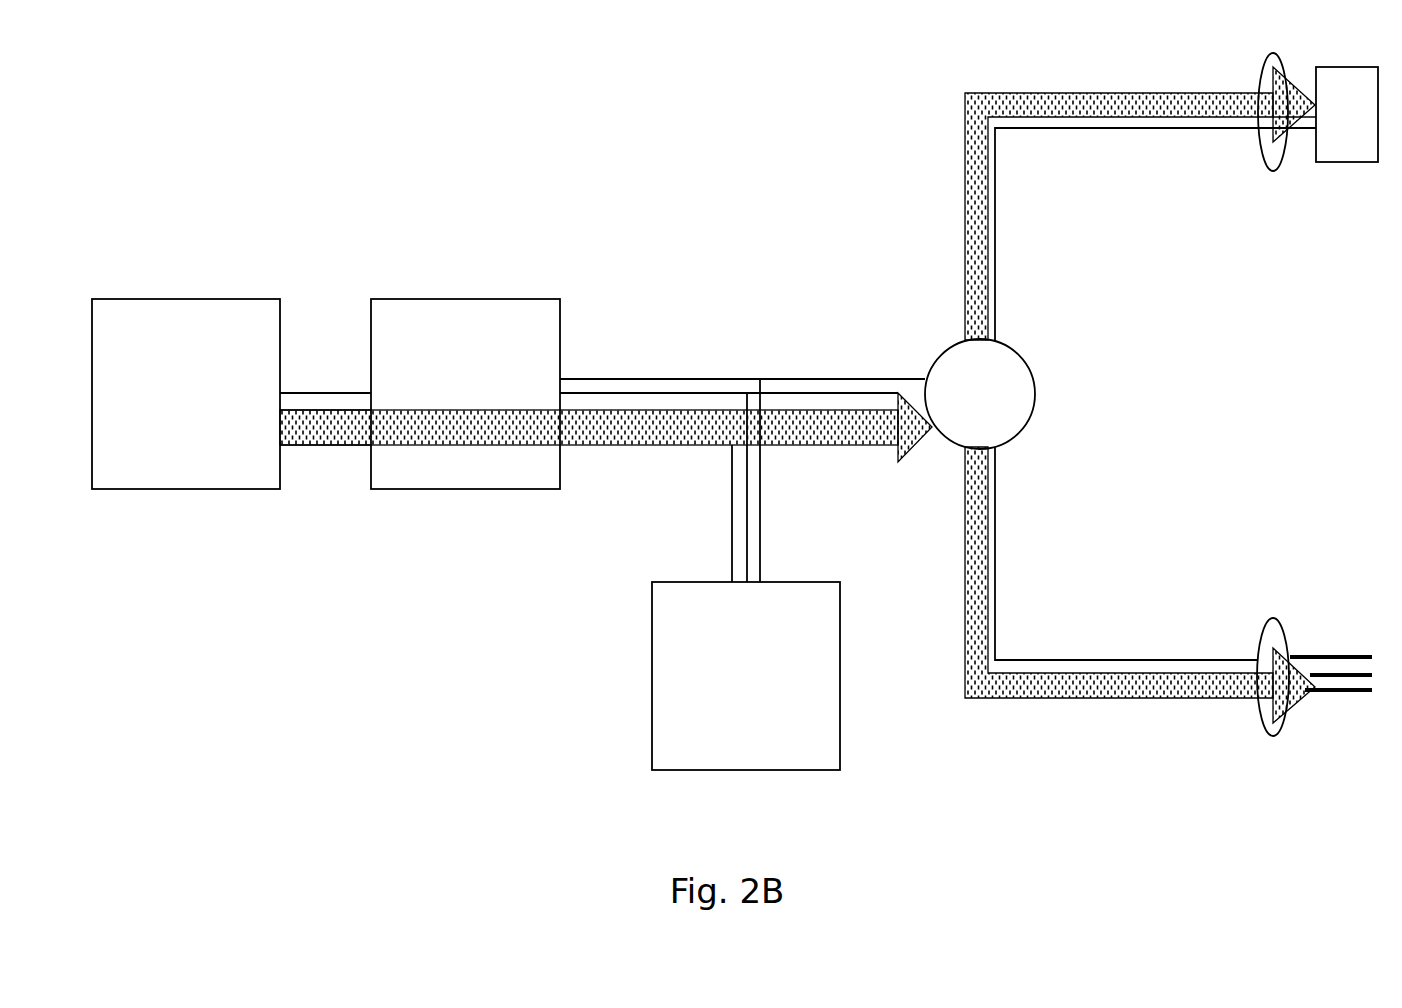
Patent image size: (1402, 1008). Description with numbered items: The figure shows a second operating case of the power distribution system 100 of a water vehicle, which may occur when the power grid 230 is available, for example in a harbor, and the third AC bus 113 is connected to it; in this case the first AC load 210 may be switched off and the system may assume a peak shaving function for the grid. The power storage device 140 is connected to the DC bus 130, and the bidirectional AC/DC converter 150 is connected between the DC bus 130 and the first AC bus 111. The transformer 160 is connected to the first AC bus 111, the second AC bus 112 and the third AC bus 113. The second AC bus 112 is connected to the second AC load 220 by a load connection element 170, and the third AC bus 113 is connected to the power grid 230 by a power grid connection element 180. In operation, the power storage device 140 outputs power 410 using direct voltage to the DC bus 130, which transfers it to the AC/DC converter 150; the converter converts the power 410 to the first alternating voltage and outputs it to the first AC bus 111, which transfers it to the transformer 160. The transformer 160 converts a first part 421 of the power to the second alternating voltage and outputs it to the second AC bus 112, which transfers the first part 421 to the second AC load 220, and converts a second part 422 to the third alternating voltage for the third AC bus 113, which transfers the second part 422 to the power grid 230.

The power distribution system 100 is at (415, 143).
The first AC bus 111 is at (732, 379).
The second AC bus 112 is at (1125, 130).
The third AC bus 113 is at (1150, 660).
The DC bus 130 is at (347, 393).
The power storage device 140 is at (210, 299).
The bidirectional AC/DC converter 150 is at (473, 299).
The transformer 160 is at (1027, 357).
The load connection element 170 is at (1265, 168).
The power grid connection element 180 is at (1257, 648).
The first AC load 210 is at (693, 582).
The second AC load 220 is at (1352, 163).
The power grid 230 is at (1345, 657).
The power 410 is at (337, 445).
The first part of the power 421 is at (1150, 93).
The second part of the power 422 is at (1127, 698).